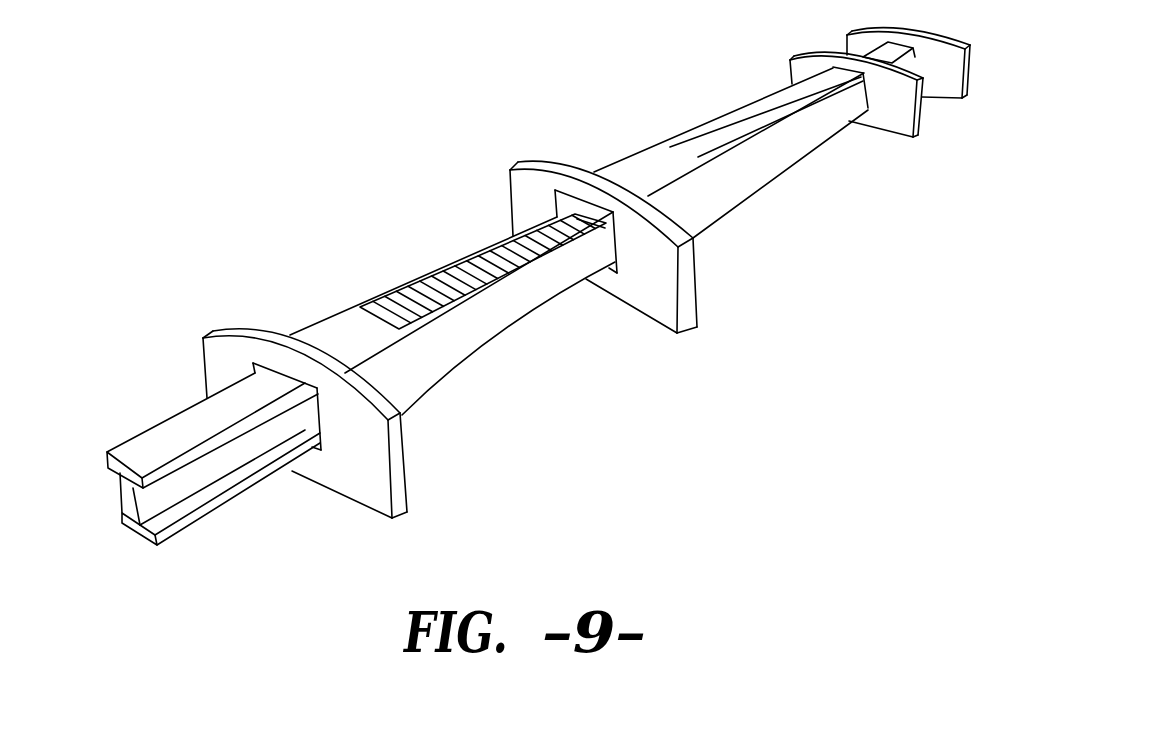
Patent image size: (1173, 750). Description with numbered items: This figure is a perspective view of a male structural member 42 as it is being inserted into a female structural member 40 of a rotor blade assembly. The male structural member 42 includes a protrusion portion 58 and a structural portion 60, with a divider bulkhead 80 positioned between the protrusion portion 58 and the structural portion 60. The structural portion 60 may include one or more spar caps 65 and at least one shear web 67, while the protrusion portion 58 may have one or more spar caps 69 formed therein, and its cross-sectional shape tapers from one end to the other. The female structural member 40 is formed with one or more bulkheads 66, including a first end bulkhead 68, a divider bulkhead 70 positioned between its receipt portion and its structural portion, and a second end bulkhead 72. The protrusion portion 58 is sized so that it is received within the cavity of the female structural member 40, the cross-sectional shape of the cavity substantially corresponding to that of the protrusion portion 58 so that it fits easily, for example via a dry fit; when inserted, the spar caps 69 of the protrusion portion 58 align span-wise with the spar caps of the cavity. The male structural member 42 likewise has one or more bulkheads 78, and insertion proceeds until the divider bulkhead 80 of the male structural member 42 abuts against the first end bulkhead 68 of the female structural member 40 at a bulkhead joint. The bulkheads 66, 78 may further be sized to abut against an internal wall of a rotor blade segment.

The female structural member 40 is at (731, 167).
The male structural member 42 is at (426, 307).
The protrusion portion 58 is at (474, 264).
The structural portion 60 is at (193, 477).
The spar caps 65 is at (143, 443).
The bulkheads 66 is at (749, 195).
The shear web 67 is at (190, 480).
The first end bulkhead 68 is at (627, 285).
The spar caps 69 is at (491, 256).
The divider bulkhead 70 is at (720, 115).
The second end bulkhead 72 is at (930, 48).
The bulkheads 78 is at (346, 466).
The divider bulkhead 80 is at (305, 448).